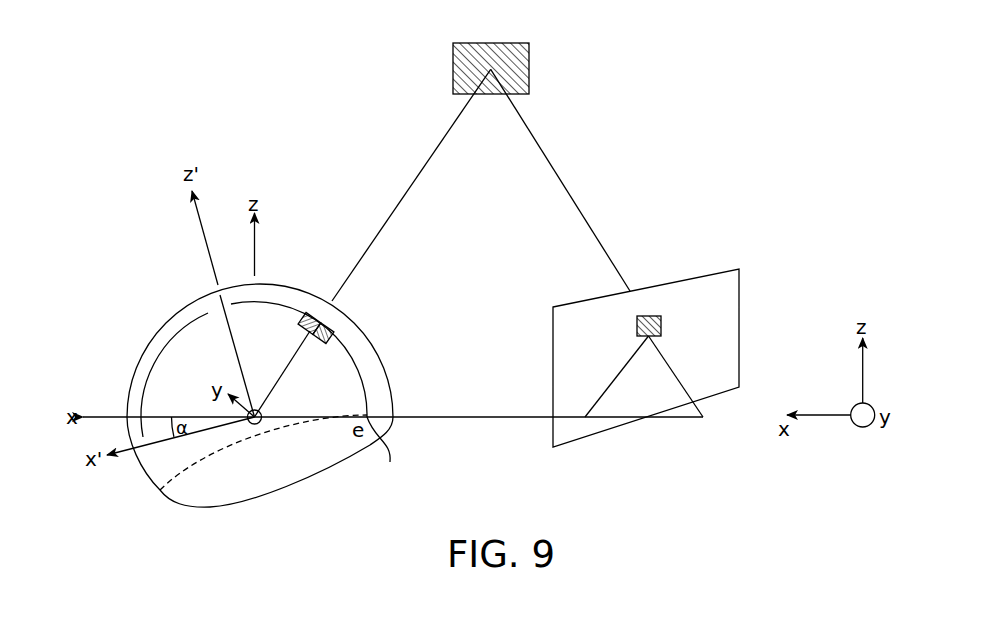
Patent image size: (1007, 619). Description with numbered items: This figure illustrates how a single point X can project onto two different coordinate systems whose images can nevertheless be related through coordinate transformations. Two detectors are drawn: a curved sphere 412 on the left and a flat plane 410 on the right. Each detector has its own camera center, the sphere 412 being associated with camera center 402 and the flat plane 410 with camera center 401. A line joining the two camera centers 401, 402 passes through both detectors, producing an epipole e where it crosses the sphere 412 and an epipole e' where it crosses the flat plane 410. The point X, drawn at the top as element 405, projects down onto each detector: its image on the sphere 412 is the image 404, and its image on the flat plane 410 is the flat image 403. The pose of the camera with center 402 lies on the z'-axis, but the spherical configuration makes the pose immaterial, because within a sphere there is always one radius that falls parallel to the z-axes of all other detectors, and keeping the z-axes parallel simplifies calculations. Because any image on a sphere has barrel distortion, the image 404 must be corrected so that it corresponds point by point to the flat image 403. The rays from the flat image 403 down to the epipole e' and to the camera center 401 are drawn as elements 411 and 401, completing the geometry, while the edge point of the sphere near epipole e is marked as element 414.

The camera center 401 is at (703, 417).
The camera center 402 is at (256, 424).
The flat image 403 is at (657, 315).
The image on the sphere 404 is at (315, 312).
The radiation source 405 is at (453, 68).
The flat plane 410 is at (723, 298).
The left projection ray / triangle side 411 is at (585, 417).
The sphere 412 is at (160, 392).
The edge point e of dome 414 is at (387, 456).